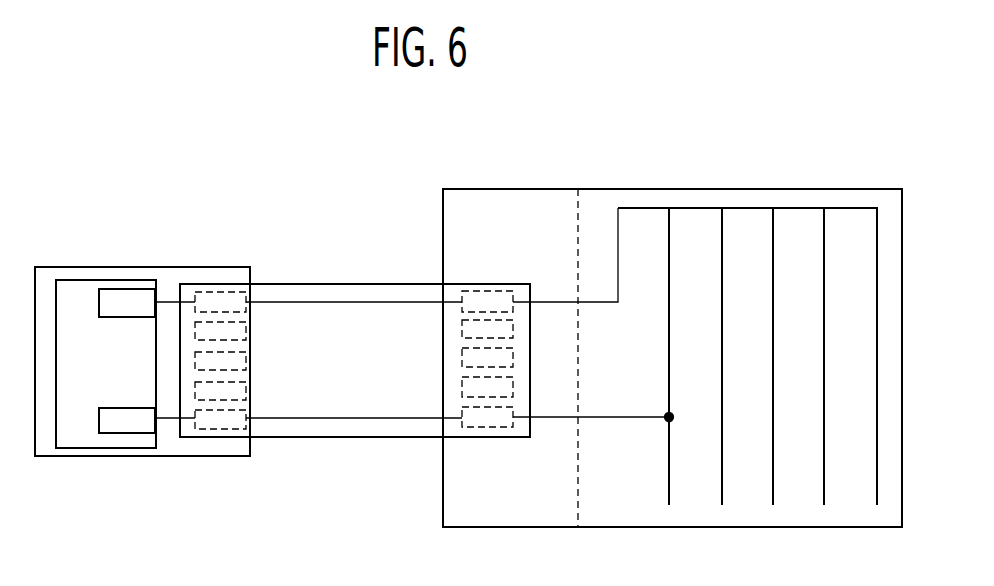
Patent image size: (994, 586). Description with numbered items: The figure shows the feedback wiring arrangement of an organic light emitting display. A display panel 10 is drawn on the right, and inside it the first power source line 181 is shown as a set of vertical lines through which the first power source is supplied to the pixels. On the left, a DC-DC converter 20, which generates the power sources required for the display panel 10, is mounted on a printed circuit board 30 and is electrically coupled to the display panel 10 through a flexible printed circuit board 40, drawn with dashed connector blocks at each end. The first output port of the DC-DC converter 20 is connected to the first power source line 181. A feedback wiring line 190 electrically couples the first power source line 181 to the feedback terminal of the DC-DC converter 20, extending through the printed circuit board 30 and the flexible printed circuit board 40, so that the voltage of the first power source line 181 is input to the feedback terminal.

The printed circuit board 30 is at (64, 266).
The DC-DC converter 20 is at (130, 280).
The flexible printed circuit board 40 is at (345, 284).
The display panel 10 is at (622, 189).
The first power source line 181 is at (792, 208).
The feedback wiring line 190 is at (550, 419).